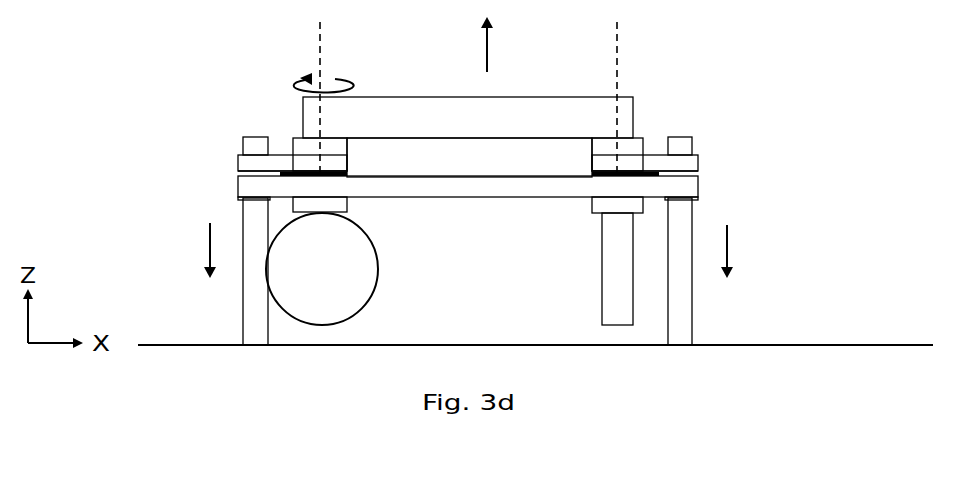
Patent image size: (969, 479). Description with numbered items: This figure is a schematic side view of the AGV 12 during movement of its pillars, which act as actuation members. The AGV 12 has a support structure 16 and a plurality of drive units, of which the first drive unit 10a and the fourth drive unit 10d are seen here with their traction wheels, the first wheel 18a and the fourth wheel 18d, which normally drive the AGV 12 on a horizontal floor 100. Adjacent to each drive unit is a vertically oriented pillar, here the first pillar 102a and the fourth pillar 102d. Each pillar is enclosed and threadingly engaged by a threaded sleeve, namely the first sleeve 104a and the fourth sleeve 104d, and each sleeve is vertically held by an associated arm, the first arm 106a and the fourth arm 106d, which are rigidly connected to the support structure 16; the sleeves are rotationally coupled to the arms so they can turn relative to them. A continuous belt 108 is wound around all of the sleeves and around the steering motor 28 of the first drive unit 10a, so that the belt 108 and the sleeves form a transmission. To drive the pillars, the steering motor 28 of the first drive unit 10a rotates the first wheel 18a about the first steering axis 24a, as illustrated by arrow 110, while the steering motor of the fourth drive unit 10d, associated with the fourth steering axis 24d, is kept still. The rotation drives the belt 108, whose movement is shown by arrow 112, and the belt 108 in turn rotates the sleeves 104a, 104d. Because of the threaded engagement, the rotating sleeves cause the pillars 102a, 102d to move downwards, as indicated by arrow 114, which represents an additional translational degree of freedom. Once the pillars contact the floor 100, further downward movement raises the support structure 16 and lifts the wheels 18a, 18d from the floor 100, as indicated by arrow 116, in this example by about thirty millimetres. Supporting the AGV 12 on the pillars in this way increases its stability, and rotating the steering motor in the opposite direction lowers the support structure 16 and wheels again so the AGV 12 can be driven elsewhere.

The first drive unit 10a is at (283, 50).
The fourth drive unit 10d is at (654, 50).
The AGV 12 is at (184, 53).
The support structure 16 is at (481, 129).
The first wheel 18a is at (342, 280).
The fourth wheel 18d is at (617, 274).
The first steering axis 24a is at (322, 68).
The fourth steering axis 24d is at (617, 68).
The steering motor 28 is at (337, 203).
The floor 100 is at (840, 343).
The first pillar 102a is at (257, 322).
The fourth pillar 102d is at (680, 322).
The first threaded sleeve 104a is at (240, 197).
The fourth threaded sleeve 104d is at (697, 197).
The first arm 106a is at (255, 163).
The fourth arm 106d is at (682, 163).
The continuous belt 108 is at (476, 194).
The arrow 110 is at (298, 83).
The arrow 112 is at (418, 158).
The arrow 114 is at (470, 250).
The arrow 116 is at (463, 44).